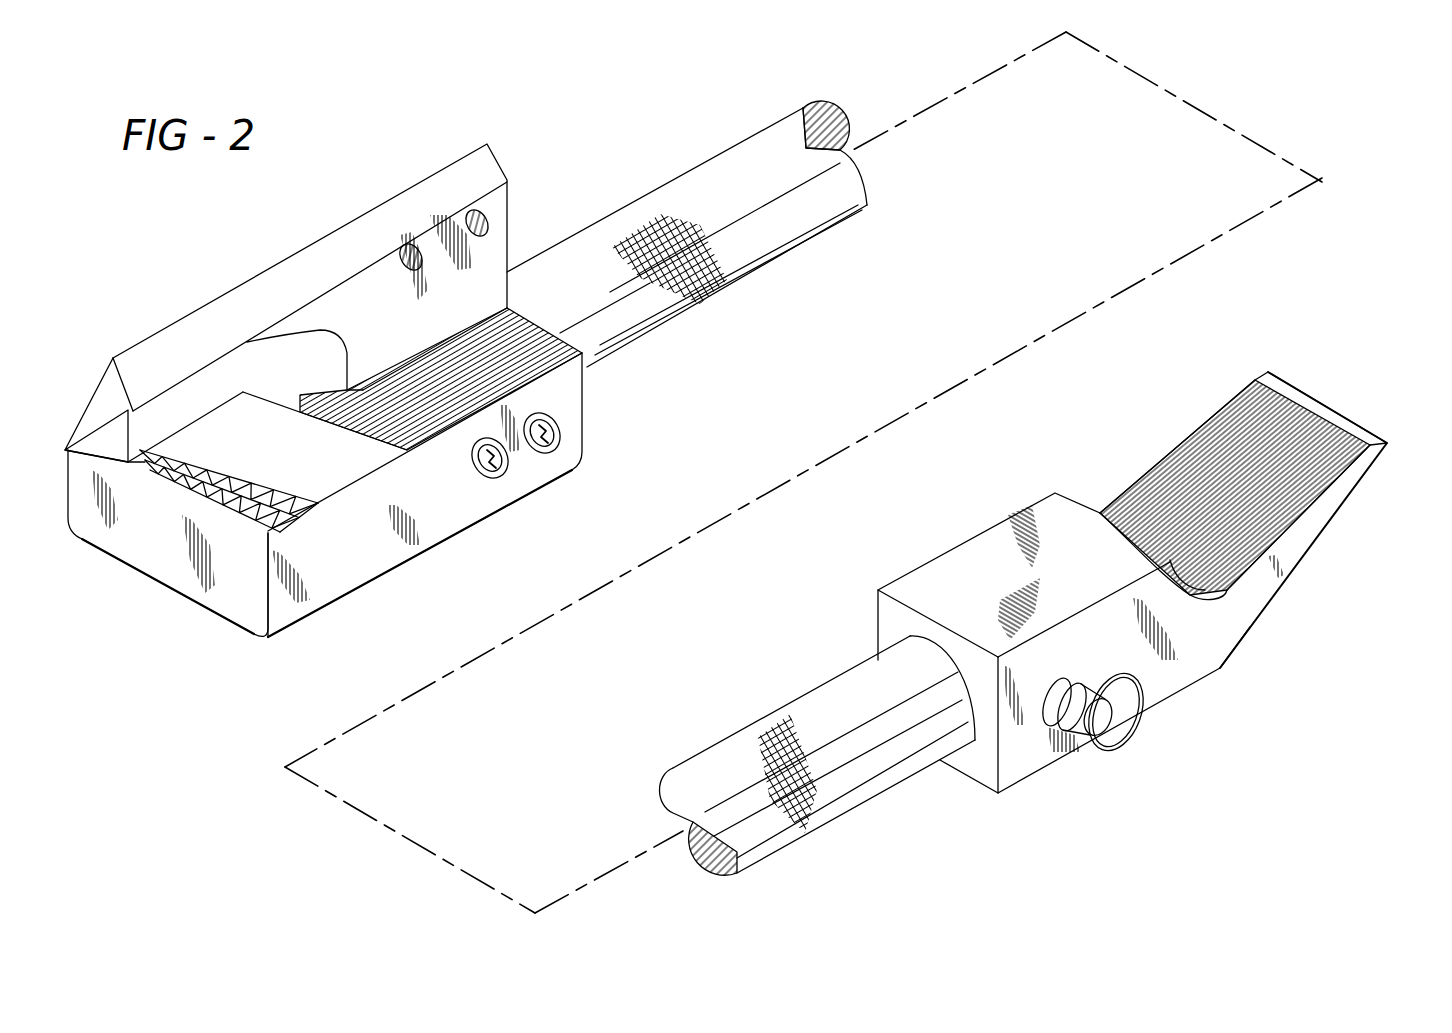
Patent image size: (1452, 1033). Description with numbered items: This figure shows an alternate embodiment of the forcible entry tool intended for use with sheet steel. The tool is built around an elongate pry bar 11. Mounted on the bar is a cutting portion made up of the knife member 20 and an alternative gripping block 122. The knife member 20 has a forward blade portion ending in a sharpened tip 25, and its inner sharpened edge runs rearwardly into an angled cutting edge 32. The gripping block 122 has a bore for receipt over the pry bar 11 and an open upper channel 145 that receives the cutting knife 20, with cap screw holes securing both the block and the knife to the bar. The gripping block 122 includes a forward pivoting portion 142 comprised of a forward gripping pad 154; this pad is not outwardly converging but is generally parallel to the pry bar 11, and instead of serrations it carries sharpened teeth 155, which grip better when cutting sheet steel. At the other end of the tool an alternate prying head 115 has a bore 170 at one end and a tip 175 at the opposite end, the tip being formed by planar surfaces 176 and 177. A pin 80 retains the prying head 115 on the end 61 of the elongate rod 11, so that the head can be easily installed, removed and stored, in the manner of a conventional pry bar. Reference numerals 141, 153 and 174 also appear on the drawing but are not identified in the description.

The elongate pry bar 11 is at (755, 170).
The knife member 20 is at (376, 198).
The sharpened tip 25 is at (103, 410).
The angled cutting edge 32 is at (282, 395).
The end of the elongate rod 61 is at (832, 703).
The pin 80 is at (1130, 745).
The prying head 115 is at (1120, 478).
The gripping block 122 is at (352, 600).
The inclined top surface 141 is at (575, 390).
The forward pivoting portion 142 is at (293, 613).
The open upper channel 145 is at (470, 300).
The serration row 153 is at (340, 503).
The gripping pad 154 is at (312, 489).
The sharpened teeth 155 is at (207, 502).
The bore 170 is at (933, 645).
The ramp 174 is at (1227, 593).
The tip 175 is at (1388, 439).
The planar surface 176 is at (1337, 517).
The planar surface 177 is at (1236, 435).